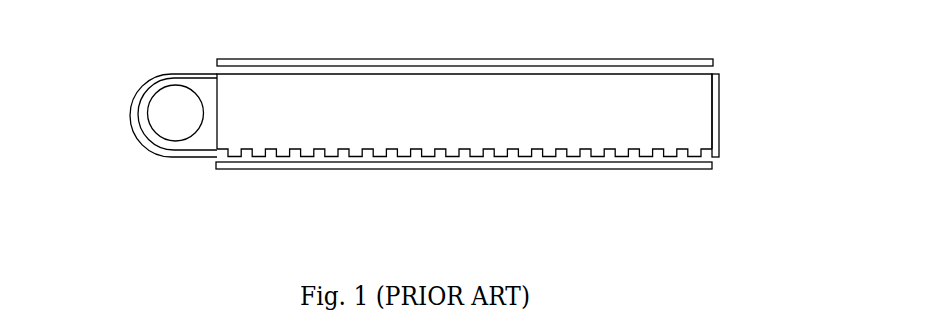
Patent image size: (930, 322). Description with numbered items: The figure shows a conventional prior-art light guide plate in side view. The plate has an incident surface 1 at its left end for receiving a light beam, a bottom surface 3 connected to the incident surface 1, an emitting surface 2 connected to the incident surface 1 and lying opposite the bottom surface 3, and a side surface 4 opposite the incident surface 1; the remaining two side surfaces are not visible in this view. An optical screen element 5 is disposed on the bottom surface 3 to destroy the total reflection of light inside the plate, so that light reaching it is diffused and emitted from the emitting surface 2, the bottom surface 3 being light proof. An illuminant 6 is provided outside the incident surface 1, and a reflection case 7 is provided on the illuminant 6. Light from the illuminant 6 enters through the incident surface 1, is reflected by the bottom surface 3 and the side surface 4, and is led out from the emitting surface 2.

The incident surface 1 is at (217, 127).
The emitting surface 2 is at (491, 72).
The bottom surface 3 is at (420, 172).
The side surface 4 is at (720, 120).
The optical screen element 5 is at (590, 152).
The illuminant 6 is at (173, 118).
The reflection case 7 is at (132, 103).